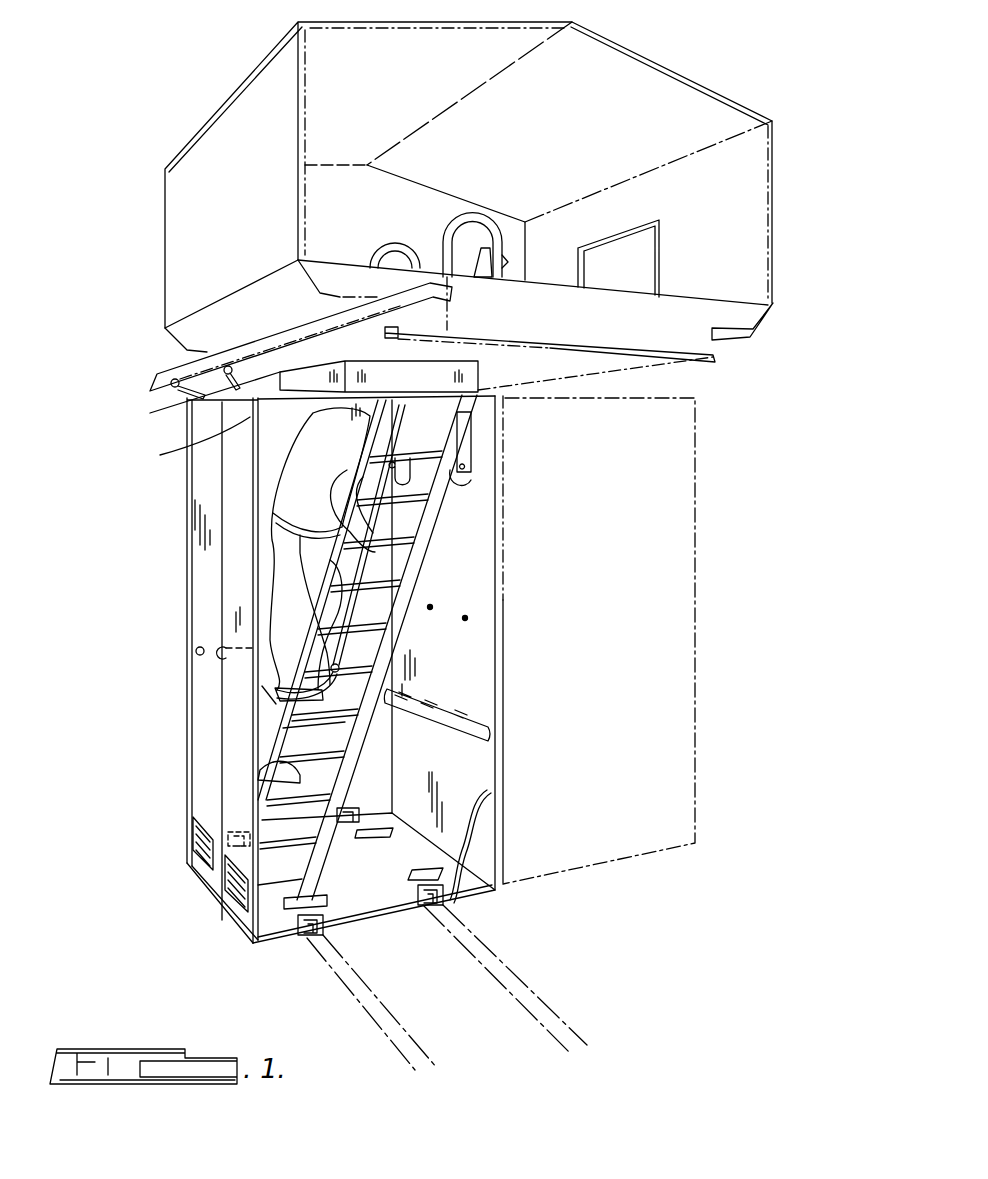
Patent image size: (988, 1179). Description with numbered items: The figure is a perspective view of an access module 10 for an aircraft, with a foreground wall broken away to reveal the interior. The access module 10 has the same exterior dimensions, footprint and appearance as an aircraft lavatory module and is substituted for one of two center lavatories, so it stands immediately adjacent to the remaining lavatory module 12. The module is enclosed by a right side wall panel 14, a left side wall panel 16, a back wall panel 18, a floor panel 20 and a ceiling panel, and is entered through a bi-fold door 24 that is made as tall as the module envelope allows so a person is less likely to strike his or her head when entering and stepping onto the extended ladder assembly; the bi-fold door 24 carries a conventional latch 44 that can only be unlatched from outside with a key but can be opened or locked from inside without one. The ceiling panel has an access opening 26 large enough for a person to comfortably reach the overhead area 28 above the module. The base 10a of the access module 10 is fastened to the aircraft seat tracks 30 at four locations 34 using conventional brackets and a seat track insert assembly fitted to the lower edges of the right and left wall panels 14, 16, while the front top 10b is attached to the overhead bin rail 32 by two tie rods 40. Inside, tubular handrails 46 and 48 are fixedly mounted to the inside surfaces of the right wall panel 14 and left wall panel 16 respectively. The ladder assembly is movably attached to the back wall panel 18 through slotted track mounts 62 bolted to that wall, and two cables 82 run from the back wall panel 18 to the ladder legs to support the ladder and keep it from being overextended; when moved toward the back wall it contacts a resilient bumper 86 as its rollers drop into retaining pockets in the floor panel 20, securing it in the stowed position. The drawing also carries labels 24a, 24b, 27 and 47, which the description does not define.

The access module 10 is at (150, 560).
The base 10a is at (233, 912).
The front top 10b is at (264, 404).
The lavatory module 12 is at (697, 627).
The right side wall panel 14 is at (485, 838).
The left side wall panel 16 is at (295, 452).
The back wall panel 18 is at (478, 697).
The floor panel 20 is at (395, 881).
The bi-fold door 24 is at (205, 492).
The upper ventilation louver 24a is at (207, 732).
The lower ventilation louver 24b is at (235, 792).
The access opening 26 is at (418, 398).
The hatch opening 27 is at (255, 440).
The overhead area 28 is at (246, 152).
The seat tracks 30 is at (540, 1013).
The overhead bin rail 32 is at (166, 372).
The attachment locations 34 is at (350, 808).
The tie rods 40 is at (180, 392).
The latch 44 is at (196, 651).
The handrail 46 is at (268, 693).
The lower ladder section 47 is at (352, 726).
The handrail 48 is at (217, 663).
The slotted track mounts 62 is at (472, 480).
The cables 82 is at (430, 607).
The bumper 86 is at (465, 720).